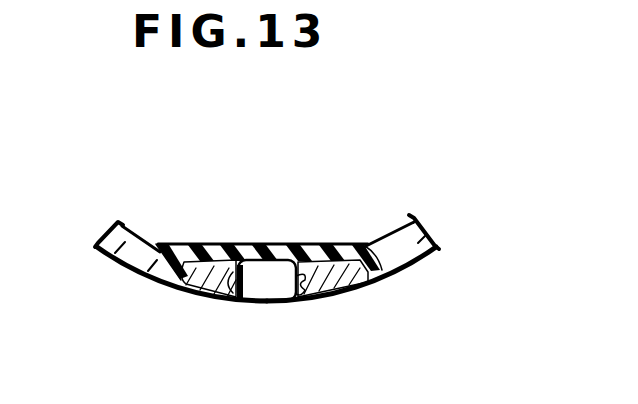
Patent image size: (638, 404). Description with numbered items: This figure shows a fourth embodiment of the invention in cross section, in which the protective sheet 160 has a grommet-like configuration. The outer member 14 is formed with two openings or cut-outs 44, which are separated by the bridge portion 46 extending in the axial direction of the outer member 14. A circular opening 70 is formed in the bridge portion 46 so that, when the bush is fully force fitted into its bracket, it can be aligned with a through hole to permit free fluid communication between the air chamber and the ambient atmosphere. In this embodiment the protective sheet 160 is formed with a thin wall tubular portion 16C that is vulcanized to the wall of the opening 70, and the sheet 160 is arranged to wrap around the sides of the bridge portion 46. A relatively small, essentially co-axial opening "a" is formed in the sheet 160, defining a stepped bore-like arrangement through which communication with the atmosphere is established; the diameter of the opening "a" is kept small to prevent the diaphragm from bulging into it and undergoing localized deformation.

The outer member 14 is at (114, 260).
The openings or cut-outs 44 is at (430, 249).
The bridge portion 46 is at (191, 294).
The circular opening 70 is at (283, 296).
The protective sheet 160 is at (199, 236).
The thin wall tubular portion 16C is at (249, 300).
The opening a is at (266, 244).